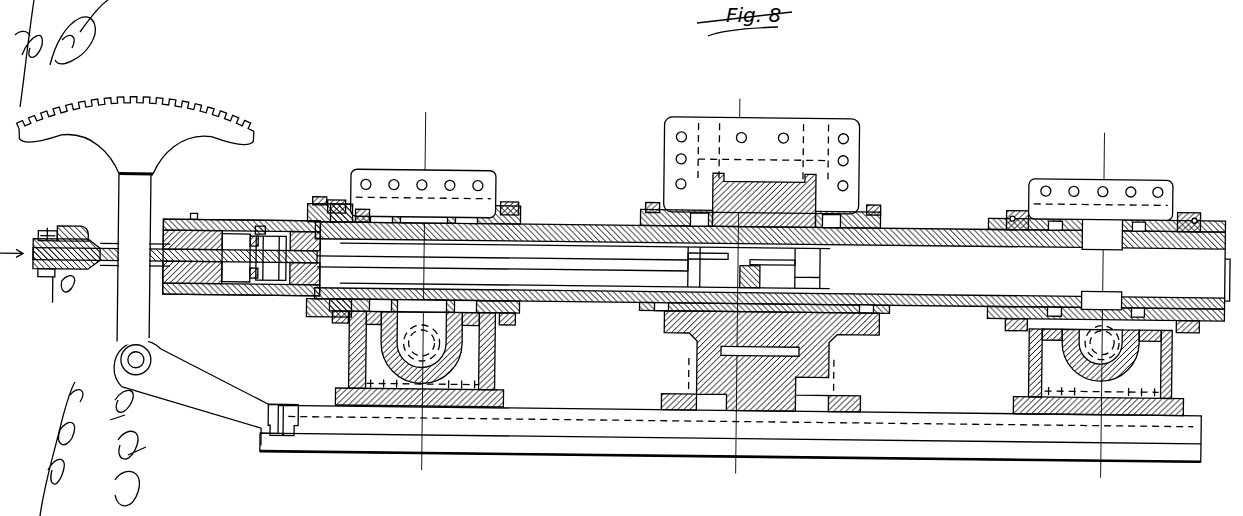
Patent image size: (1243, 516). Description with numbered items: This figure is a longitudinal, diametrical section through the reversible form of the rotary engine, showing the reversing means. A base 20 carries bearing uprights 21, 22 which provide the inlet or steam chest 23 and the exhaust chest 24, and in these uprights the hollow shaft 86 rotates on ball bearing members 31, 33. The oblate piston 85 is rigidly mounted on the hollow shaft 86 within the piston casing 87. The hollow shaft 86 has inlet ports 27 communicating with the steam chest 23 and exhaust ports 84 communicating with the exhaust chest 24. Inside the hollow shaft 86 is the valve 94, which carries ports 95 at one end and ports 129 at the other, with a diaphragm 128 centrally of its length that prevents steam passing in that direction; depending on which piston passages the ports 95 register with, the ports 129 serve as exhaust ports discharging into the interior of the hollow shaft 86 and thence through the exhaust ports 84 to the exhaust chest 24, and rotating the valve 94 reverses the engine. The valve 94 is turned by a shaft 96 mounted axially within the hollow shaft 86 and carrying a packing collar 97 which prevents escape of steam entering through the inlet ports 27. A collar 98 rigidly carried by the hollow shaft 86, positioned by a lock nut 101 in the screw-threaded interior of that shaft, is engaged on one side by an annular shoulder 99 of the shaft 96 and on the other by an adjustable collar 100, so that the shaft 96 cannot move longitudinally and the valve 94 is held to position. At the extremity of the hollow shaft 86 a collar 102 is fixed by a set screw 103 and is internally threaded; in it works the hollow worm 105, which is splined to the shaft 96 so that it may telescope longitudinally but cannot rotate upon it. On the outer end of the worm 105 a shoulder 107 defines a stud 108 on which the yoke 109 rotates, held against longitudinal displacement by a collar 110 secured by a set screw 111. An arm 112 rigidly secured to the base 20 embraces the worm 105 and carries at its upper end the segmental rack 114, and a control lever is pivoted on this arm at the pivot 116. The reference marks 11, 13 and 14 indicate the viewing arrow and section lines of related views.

The spindle 11 is at (14, 240).
The bearing center line 13 is at (583, 291).
The bearing center line 14 is at (1113, 316).
The base 20 is at (600, 428).
The bearing upright 21 is at (496, 358).
The bearing upright 22 is at (1032, 362).
The inlet chamber (steam chest) 23 is at (393, 322).
The exhaust chamber (exhaust chest) 24 is at (1087, 318).
The inlet ports 27 is at (427, 227).
The ball bearing members 31 is at (336, 202).
The ball bearing members 33 is at (1013, 210).
The exhaust ports 84 is at (1105, 240).
The piston 85 is at (753, 183).
The hollow shaft 86 is at (580, 225).
The piston casing 87 is at (830, 162).
The valve 94 is at (810, 272).
The ports 95 is at (718, 252).
The shaft 96 is at (602, 265).
The packing collar 97 is at (368, 212).
The collar 98 is at (290, 223).
The annular shoulder 99 is at (323, 212).
The adjustable collar 100 is at (290, 286).
The lock nut 101 is at (263, 228).
The collar 102 is at (210, 230).
The set screw 103 is at (197, 223).
The worm 105 is at (115, 278).
The shoulder 107 is at (98, 243).
The stud 108 is at (32, 275).
The yoke 109 is at (80, 233).
The collar 110 is at (56, 304).
The set screw 111 is at (28, 223).
The arm 112 is at (202, 413).
The segmental rack 114 is at (163, 115).
The pivot 116 is at (128, 366).
The diaphragm 128 is at (693, 350).
The ports 129 is at (817, 257).